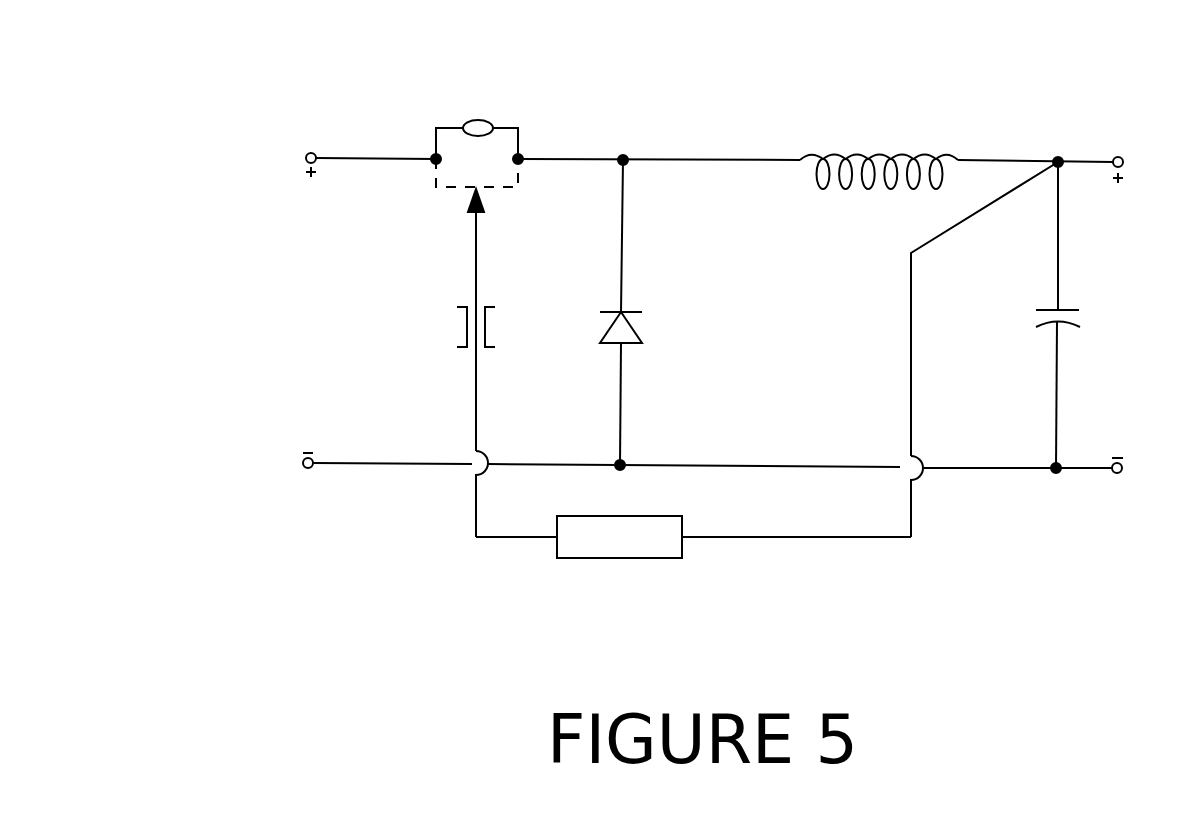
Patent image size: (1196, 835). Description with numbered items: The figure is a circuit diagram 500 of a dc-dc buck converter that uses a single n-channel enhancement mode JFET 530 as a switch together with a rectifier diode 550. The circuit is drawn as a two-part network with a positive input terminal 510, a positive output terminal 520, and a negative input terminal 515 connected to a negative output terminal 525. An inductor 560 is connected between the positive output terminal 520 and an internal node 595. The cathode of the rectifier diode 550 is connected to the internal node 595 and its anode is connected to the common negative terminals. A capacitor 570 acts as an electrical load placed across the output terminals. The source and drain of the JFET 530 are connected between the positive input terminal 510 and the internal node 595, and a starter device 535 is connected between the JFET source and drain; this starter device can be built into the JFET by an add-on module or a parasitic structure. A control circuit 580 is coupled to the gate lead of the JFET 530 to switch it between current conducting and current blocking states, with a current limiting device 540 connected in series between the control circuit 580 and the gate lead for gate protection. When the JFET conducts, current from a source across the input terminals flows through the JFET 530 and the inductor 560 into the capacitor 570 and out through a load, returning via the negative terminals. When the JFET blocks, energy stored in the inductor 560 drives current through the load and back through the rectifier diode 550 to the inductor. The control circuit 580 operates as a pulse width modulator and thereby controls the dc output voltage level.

The circuit diagram 500 is at (205, 40).
The positive input terminal 510 is at (307, 154).
The negative input terminal 515 is at (306, 469).
The positive output terminal 520 is at (1122, 157).
The negative output terminal 525 is at (1118, 473).
The n-channel enhancement mode JFET 530 is at (458, 190).
The starter device 535 is at (487, 121).
The current limiting device 540 is at (460, 349).
The rectifier diode 550 is at (632, 343).
The inductor 560 is at (834, 148).
The capacitor 570 is at (1082, 314).
The control circuit 580 is at (658, 558).
The internal node 595 is at (627, 154).